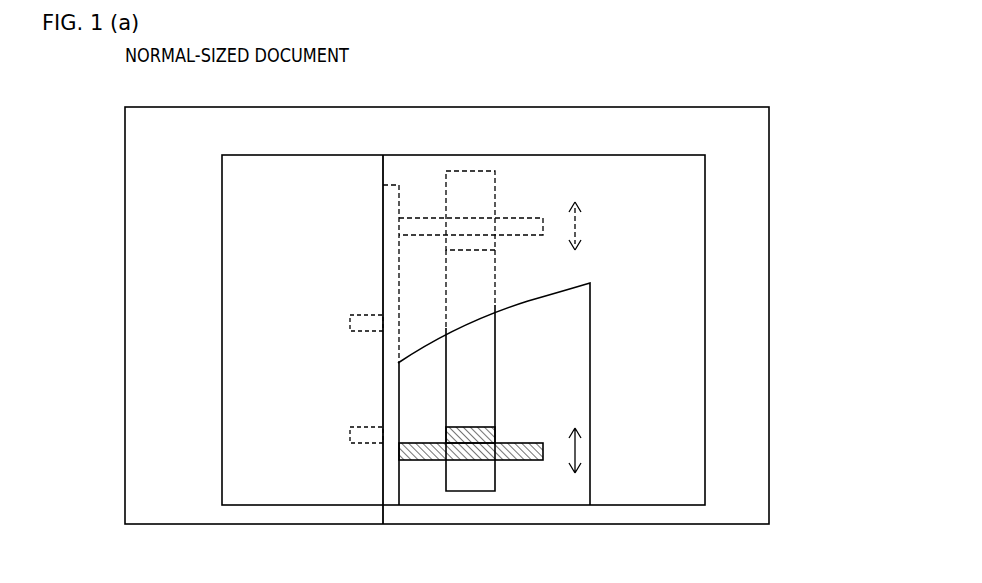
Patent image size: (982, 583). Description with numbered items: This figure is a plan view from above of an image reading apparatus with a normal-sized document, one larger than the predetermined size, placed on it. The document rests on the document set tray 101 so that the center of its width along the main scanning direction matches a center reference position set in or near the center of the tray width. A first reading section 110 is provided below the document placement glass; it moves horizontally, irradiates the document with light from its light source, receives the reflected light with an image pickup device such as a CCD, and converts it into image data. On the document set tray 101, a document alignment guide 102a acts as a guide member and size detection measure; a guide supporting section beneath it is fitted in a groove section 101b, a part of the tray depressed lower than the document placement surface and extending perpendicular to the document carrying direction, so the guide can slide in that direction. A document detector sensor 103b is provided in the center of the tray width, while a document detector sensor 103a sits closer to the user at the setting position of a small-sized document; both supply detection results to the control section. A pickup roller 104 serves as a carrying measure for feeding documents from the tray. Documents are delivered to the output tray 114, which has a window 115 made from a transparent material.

The first reading section 110 is at (476, 285).
The document set tray 101 is at (755, 262).
The output tray 114 is at (680, 197).
The window 115 is at (573, 312).
The groove section 101b is at (477, 360).
The document detector sensor 103b is at (290, 323).
The document detector sensor 103a is at (290, 435).
The pickup roller 104 is at (390, 482).
The document alignment guide 102a is at (527, 460).